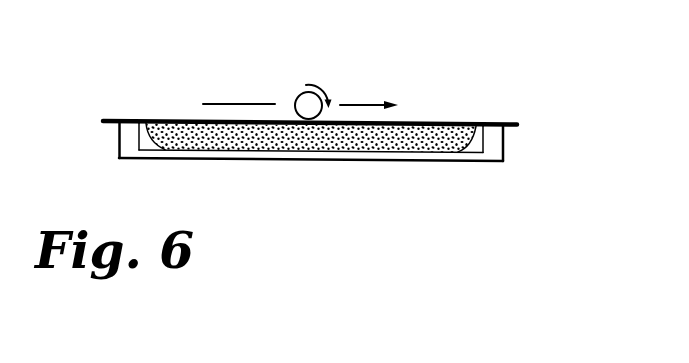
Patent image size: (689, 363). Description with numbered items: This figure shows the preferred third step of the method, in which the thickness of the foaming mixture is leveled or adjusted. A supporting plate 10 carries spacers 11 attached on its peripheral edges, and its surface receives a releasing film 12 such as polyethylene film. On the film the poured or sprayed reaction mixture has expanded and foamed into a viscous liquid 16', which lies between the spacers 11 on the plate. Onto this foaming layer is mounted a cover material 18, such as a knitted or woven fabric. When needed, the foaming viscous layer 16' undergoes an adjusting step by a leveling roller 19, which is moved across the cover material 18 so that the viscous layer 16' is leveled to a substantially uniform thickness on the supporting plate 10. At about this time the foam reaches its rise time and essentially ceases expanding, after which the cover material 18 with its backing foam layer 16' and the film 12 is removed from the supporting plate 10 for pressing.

The supporting plate 10 is at (247, 161).
The spacers 11 is at (118, 140).
The releasing film 12 is at (473, 161).
The viscous liquid foaming layer 16' is at (311, 176).
The cover material 18 is at (491, 122).
The leveling roller 19 is at (299, 96).